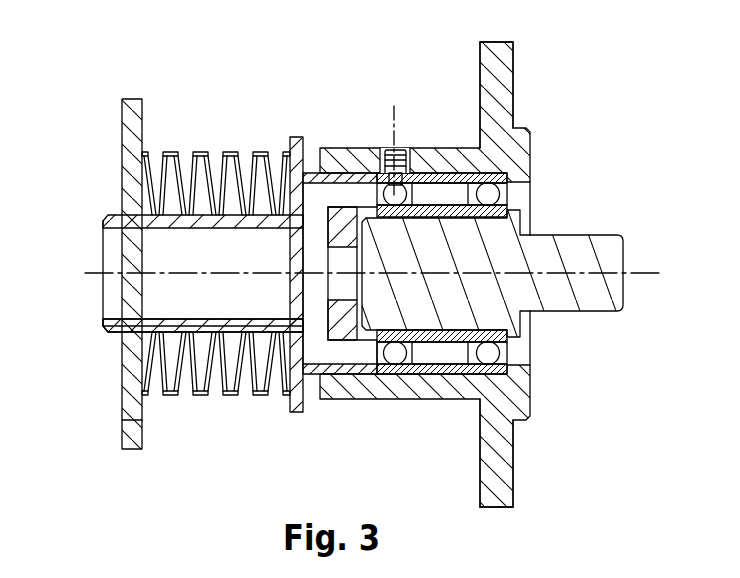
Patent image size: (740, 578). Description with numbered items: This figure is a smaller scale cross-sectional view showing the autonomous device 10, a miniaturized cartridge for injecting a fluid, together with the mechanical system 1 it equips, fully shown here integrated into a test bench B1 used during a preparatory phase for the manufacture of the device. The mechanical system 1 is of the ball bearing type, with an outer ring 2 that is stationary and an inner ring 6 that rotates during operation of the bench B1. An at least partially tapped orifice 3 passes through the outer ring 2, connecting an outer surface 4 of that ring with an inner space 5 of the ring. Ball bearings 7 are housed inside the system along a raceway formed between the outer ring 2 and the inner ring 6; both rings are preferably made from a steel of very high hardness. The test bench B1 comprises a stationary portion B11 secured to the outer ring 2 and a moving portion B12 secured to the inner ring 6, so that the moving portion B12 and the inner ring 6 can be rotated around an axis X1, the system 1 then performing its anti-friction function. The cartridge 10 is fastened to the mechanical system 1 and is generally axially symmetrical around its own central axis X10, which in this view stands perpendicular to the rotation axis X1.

The mechanical system 1 is at (412, 180).
The outer ring 2 is at (417, 318).
The tapped orifice 3 is at (375, 177).
The outer surface 4 is at (399, 384).
The inner space 5 is at (370, 354).
The inner ring 6 is at (430, 341).
The ball bearings 7 is at (393, 357).
The autonomous device 10 is at (390, 147).
The central axis X10 is at (401, 141).
The axis X1 is at (389, 274).
The test bench B1 is at (584, 128).
The stationary portion B11 is at (503, 62).
The moving portion B12 is at (585, 247).